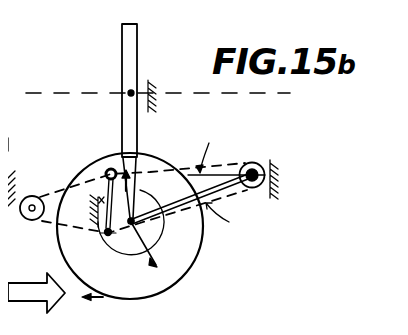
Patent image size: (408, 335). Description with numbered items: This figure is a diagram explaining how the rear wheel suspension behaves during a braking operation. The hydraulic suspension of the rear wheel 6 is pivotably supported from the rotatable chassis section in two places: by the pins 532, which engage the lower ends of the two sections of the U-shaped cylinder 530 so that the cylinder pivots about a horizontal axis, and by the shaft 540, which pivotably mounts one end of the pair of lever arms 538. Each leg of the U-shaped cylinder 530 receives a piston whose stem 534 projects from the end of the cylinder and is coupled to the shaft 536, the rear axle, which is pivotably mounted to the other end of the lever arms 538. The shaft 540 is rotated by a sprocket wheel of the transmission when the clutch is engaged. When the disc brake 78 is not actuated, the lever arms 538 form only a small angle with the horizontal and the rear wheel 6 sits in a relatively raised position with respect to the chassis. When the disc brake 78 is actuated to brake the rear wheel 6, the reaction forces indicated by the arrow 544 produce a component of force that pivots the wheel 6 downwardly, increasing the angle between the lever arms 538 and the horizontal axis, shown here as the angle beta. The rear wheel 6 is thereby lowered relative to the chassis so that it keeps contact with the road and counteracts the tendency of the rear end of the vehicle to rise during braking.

The rear wheel 6 is at (183, 280).
The disc brake 78 is at (142, 232).
The U-shaped cylinder 530 is at (130, 60).
The pins 532 is at (130, 93).
The piston stem 534 is at (127, 185).
The shaft 536 is at (130, 230).
The lever arms 538 is at (188, 213).
The shaft 540 is at (258, 164).
The arrow 544 is at (42, 300).